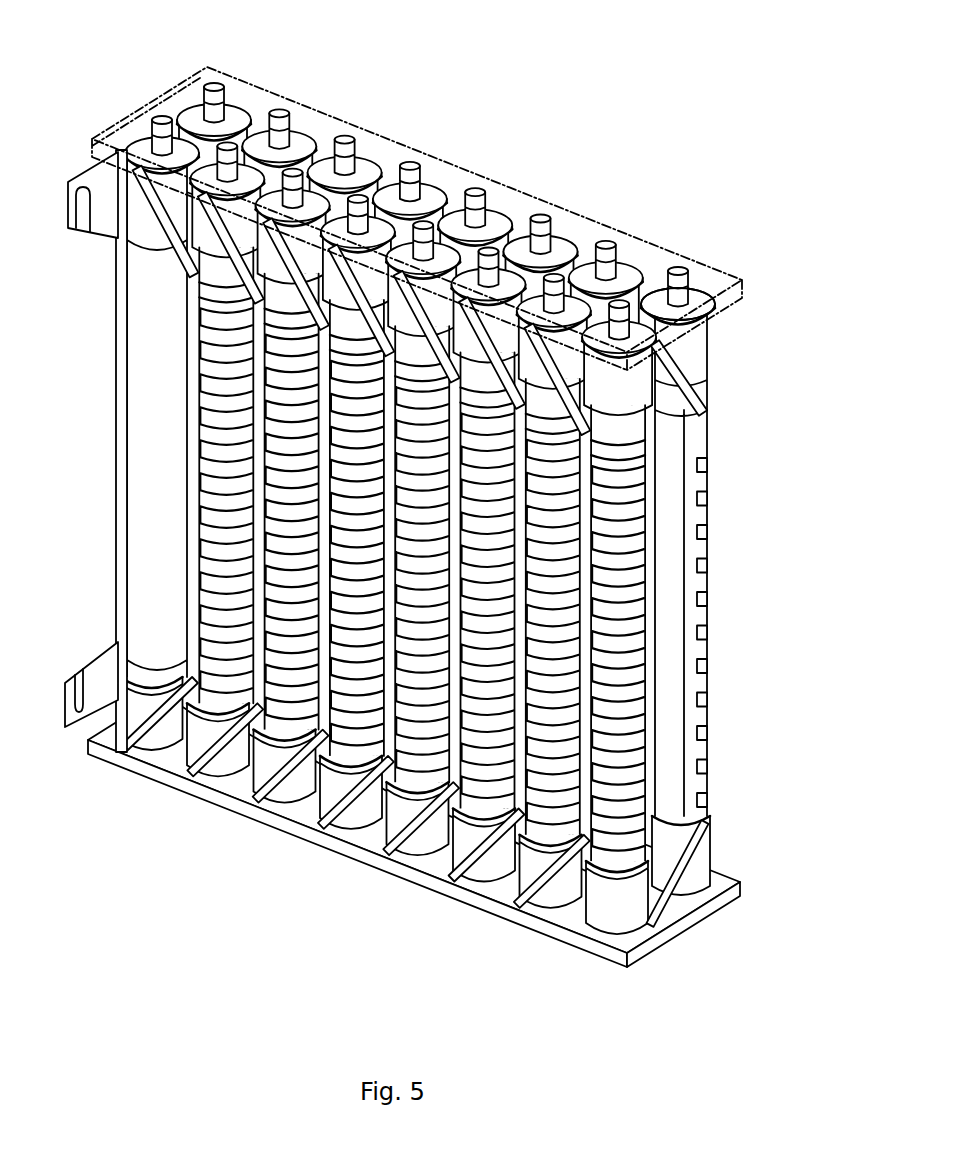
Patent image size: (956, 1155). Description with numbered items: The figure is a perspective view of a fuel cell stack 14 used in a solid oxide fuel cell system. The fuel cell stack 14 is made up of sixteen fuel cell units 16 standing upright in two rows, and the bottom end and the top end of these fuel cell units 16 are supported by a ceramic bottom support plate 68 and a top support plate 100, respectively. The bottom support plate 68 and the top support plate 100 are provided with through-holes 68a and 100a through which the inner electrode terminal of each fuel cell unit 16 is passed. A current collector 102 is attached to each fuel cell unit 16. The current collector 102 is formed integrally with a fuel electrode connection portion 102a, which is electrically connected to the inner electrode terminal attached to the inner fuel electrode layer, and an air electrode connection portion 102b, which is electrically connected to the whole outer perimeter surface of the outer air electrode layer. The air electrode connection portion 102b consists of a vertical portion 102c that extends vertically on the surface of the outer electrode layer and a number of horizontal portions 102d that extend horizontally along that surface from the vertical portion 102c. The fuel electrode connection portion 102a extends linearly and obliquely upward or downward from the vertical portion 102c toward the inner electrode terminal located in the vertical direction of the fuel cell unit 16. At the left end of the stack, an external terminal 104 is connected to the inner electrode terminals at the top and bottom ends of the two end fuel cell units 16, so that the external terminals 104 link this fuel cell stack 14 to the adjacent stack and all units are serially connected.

The fuel cell stack 14 is at (503, 128).
The fuel cell unit 16 is at (640, 543).
The bottom support plate 68 is at (607, 955).
The through-hole 68a is at (565, 935).
The top support plate 100 is at (728, 278).
The through-hole 100a is at (669, 286).
The current collector 102 is at (633, 793).
The fuel electrode connection portion 102a is at (640, 401).
The air electrode connection portion 102b is at (619, 617).
The vertical portion 102c is at (587, 643).
The horizontal portion 102d is at (619, 617).
The external terminal 104 is at (74, 233).